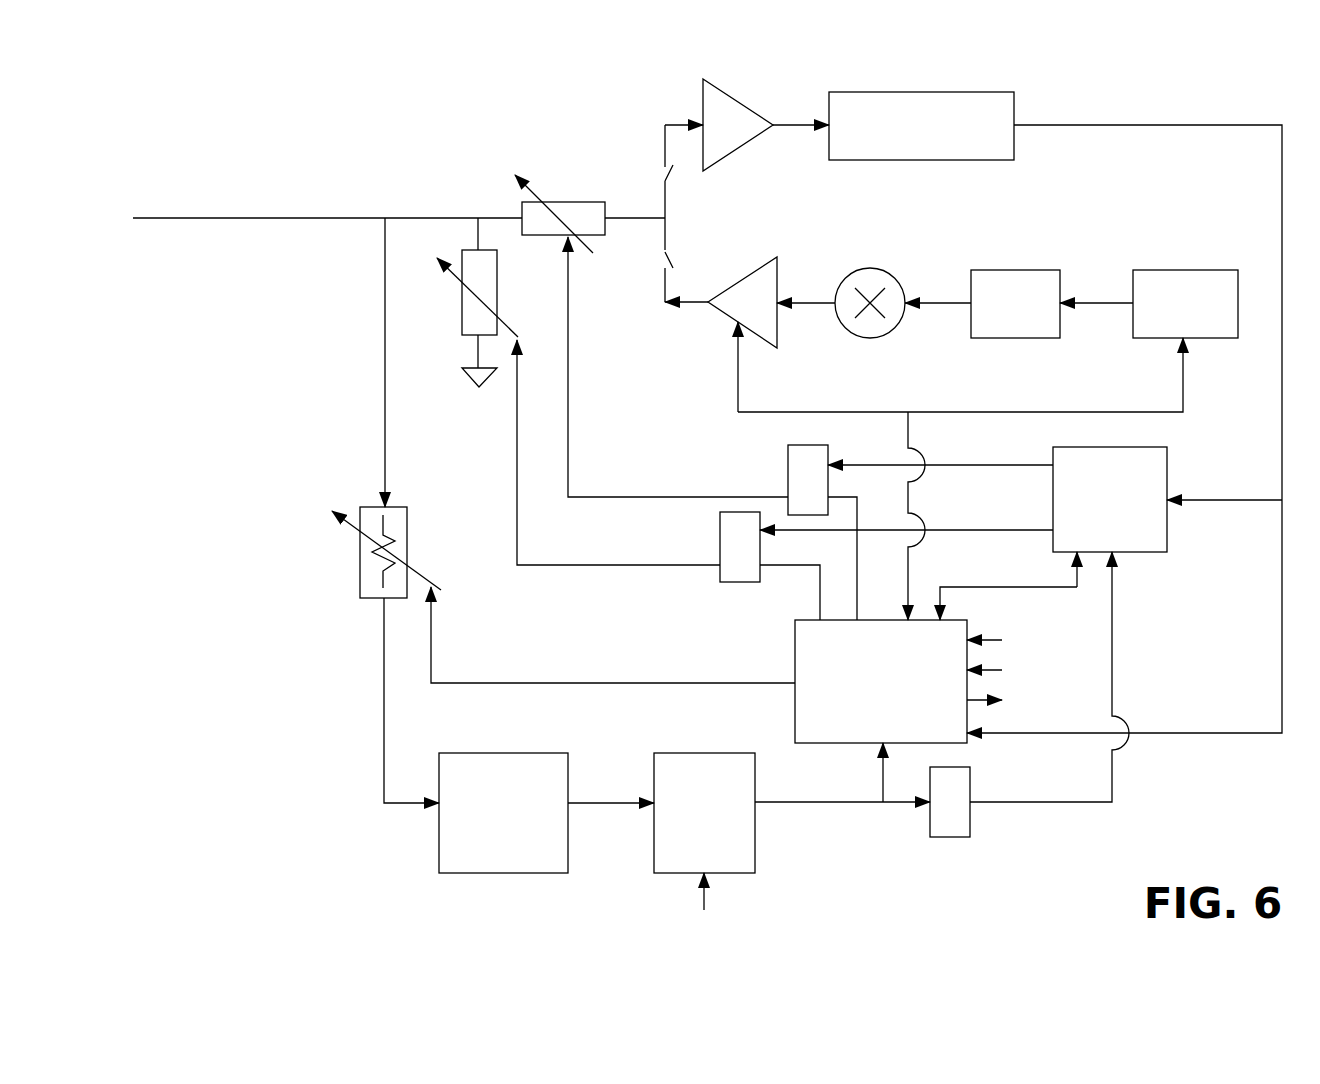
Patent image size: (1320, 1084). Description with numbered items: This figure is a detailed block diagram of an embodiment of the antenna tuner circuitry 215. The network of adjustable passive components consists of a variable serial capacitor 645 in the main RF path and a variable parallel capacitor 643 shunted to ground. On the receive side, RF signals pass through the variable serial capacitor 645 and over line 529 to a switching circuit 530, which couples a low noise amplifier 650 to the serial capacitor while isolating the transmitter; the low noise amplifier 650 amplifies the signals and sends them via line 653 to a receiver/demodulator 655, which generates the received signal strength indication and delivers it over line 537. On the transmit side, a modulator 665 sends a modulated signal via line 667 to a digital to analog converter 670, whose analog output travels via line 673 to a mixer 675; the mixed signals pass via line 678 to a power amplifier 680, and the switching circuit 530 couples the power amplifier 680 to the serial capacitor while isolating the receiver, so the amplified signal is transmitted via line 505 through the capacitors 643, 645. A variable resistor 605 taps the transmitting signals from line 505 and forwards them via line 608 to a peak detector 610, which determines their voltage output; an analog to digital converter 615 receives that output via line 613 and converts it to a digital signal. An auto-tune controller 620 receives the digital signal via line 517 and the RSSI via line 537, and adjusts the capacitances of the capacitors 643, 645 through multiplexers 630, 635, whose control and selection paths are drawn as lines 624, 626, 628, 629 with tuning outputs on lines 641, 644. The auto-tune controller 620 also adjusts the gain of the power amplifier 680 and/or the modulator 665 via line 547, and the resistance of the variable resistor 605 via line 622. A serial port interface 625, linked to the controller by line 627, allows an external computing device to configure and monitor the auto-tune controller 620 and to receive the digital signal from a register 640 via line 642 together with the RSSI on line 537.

The antenna tuner circuitry 215 is at (227, 140).
The line 505 is at (255, 217).
The variable serial capacitor 645 is at (560, 158).
The line 529 is at (638, 227).
The switching circuit 530 is at (645, 118).
The variable parallel capacitor 643 is at (445, 303).
The C3 control line 644 is at (567, 390).
The C2 control line 641 is at (517, 497).
The low noise amplifier 650 is at (725, 88).
The line 653 is at (786, 127).
The receiver/demodulator 655 is at (907, 90).
The line 537 is at (1168, 120).
The power amplifier 680 is at (766, 262).
The mixer 675 is at (870, 262).
The line 678 is at (805, 305).
The digital to analog converter 670 is at (1047, 262).
The line 673 is at (942, 305).
The modulator 665 is at (1218, 262).
The line 667 is at (1092, 305).
The line 547 is at (910, 590).
The multiplexer 630 is at (778, 468).
The multiplexer 635 is at (707, 548).
The mux control line 626 is at (835, 492).
The mux control line 624 is at (775, 560).
The SPI output line 628 is at (942, 462).
The SPI output line 629 is at (942, 527).
The serial port interface 625 is at (1110, 499).
The SPI control line 627 is at (970, 582).
The line 642 is at (1112, 683).
The auto-tune controller 620 is at (940, 681).
The line 622 is at (597, 685).
The variable resistor 605 is at (362, 488).
The line 608 is at (382, 719).
The peak detector 610 is at (503, 813).
The line 613 is at (577, 805).
The analog to digital converter 615 is at (704, 850).
The line 517 is at (800, 803).
The register 640 is at (985, 817).